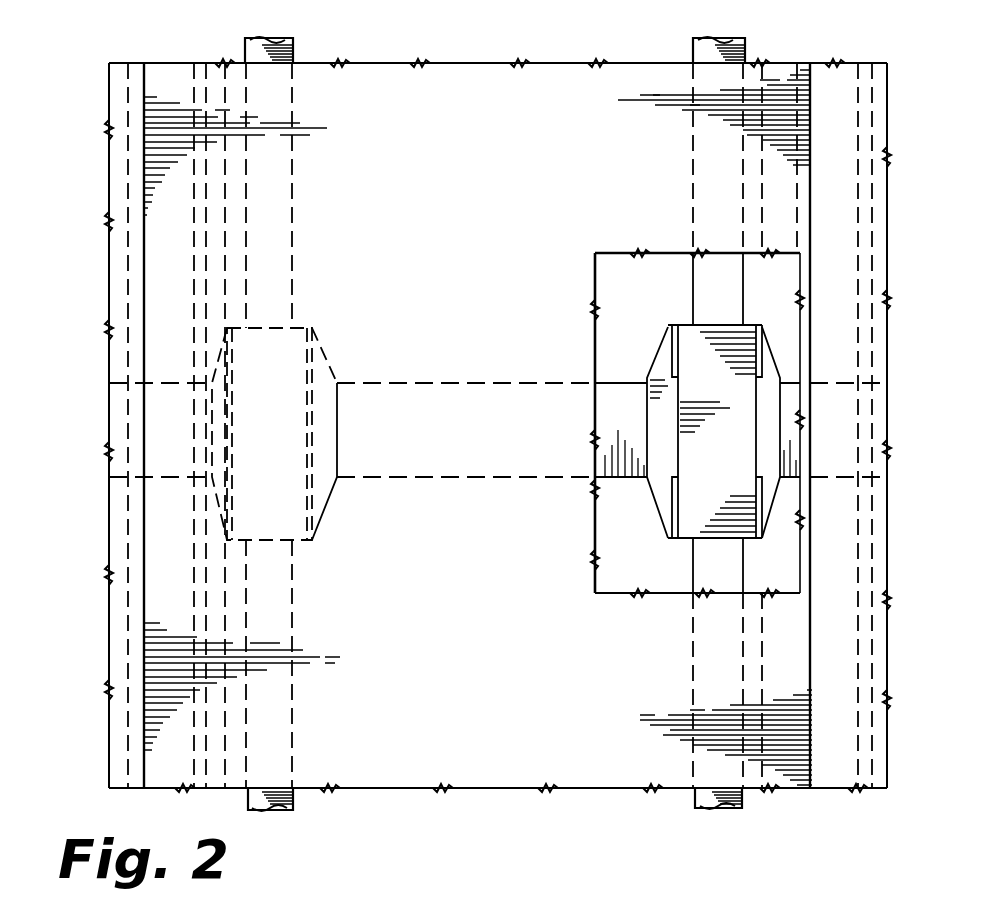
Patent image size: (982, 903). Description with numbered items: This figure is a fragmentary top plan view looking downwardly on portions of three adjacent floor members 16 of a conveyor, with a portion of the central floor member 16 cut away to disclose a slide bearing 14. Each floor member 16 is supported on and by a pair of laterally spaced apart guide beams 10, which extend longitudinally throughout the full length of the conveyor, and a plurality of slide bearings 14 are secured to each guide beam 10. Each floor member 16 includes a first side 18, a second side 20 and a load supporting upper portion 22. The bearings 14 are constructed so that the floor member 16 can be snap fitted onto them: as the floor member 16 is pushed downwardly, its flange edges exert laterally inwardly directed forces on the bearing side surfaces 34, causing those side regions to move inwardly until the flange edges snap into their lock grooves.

The guide beam 10 is at (263, 812).
The slide bearing 14 is at (325, 512).
The floor member 16 is at (108, 687).
The first side 18 is at (160, 788).
The second side 20 is at (125, 63).
The load supporting upper portion 22 is at (515, 760).
The bearing side surface 34 is at (763, 340).